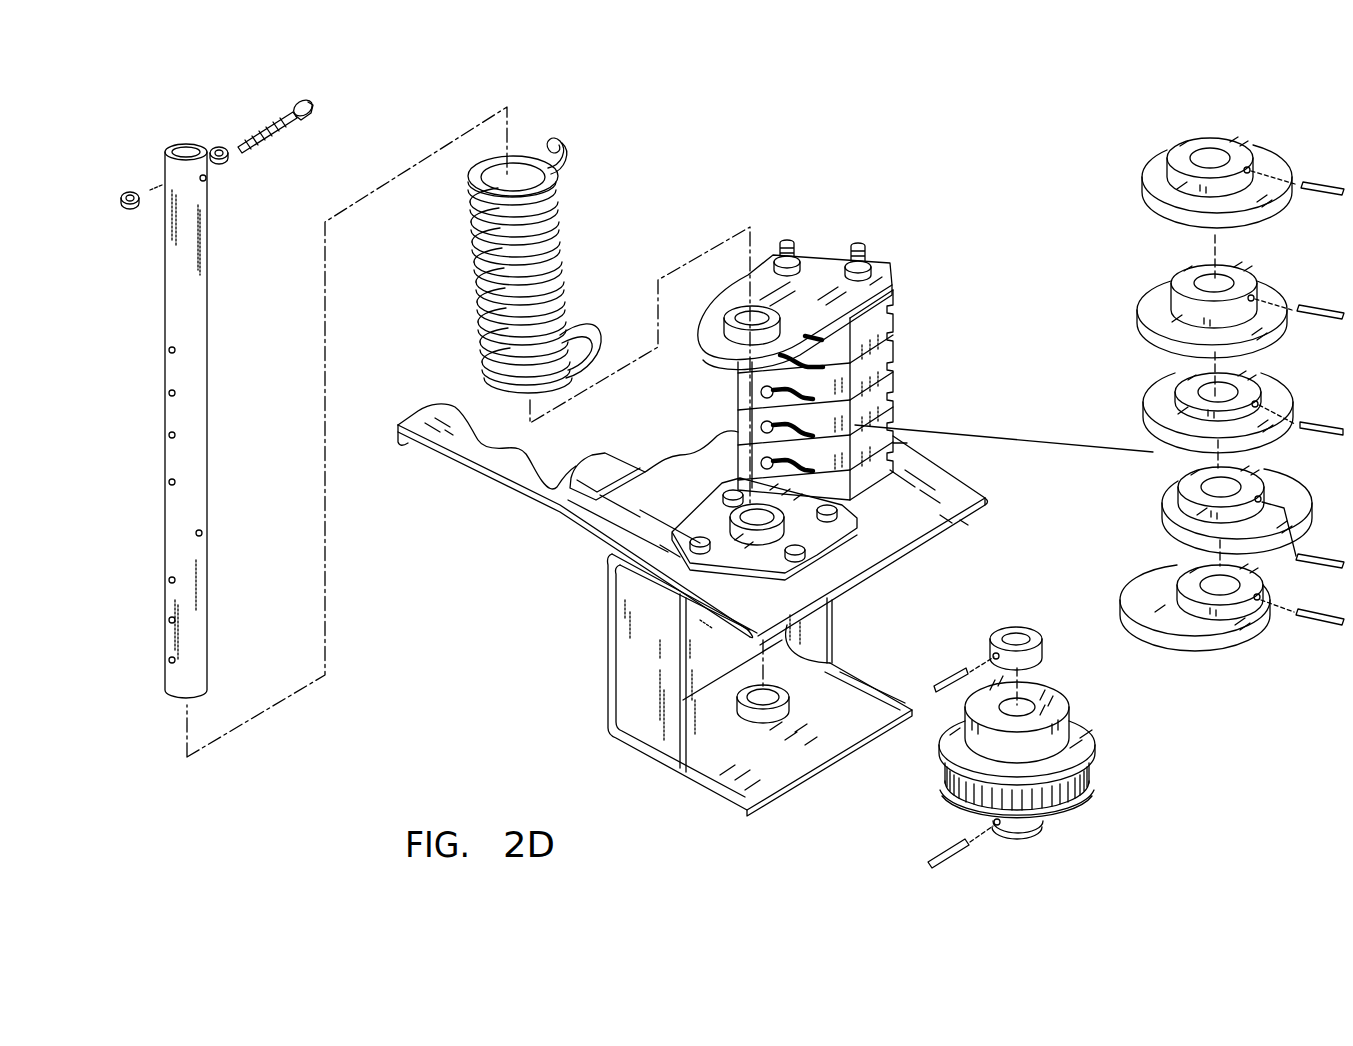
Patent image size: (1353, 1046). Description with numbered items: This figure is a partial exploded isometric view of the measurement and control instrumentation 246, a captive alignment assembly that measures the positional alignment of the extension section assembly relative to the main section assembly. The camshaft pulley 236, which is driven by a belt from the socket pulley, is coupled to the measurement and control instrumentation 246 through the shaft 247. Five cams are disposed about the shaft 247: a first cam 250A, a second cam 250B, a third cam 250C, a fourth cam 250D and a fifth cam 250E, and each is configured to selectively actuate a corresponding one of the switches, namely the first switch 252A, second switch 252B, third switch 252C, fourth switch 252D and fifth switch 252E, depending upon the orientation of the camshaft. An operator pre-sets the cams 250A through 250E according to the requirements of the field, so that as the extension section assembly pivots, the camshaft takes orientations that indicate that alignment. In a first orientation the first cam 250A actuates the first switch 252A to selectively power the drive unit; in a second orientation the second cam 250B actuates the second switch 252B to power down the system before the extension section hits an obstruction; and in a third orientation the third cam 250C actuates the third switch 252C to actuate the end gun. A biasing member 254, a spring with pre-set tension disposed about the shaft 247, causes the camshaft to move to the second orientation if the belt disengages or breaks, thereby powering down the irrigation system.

The camshaft pulley 236 is at (1097, 733).
The measurement and control instrumentation 246 is at (815, 210).
The shaft 247 is at (183, 257).
The first cam 250A is at (1162, 192).
The second cam 250B is at (1163, 318).
The third cam 250C is at (1163, 410).
The fourth cam 250D is at (1163, 512).
The fifth cam 250E is at (1143, 595).
The first switch 252A is at (822, 338).
The second switch 252B is at (823, 366).
The third switch 252C is at (813, 399).
The fourth switch 252D is at (813, 435).
The fifth switch 252E is at (813, 469).
The biasing member 254 is at (545, 232).